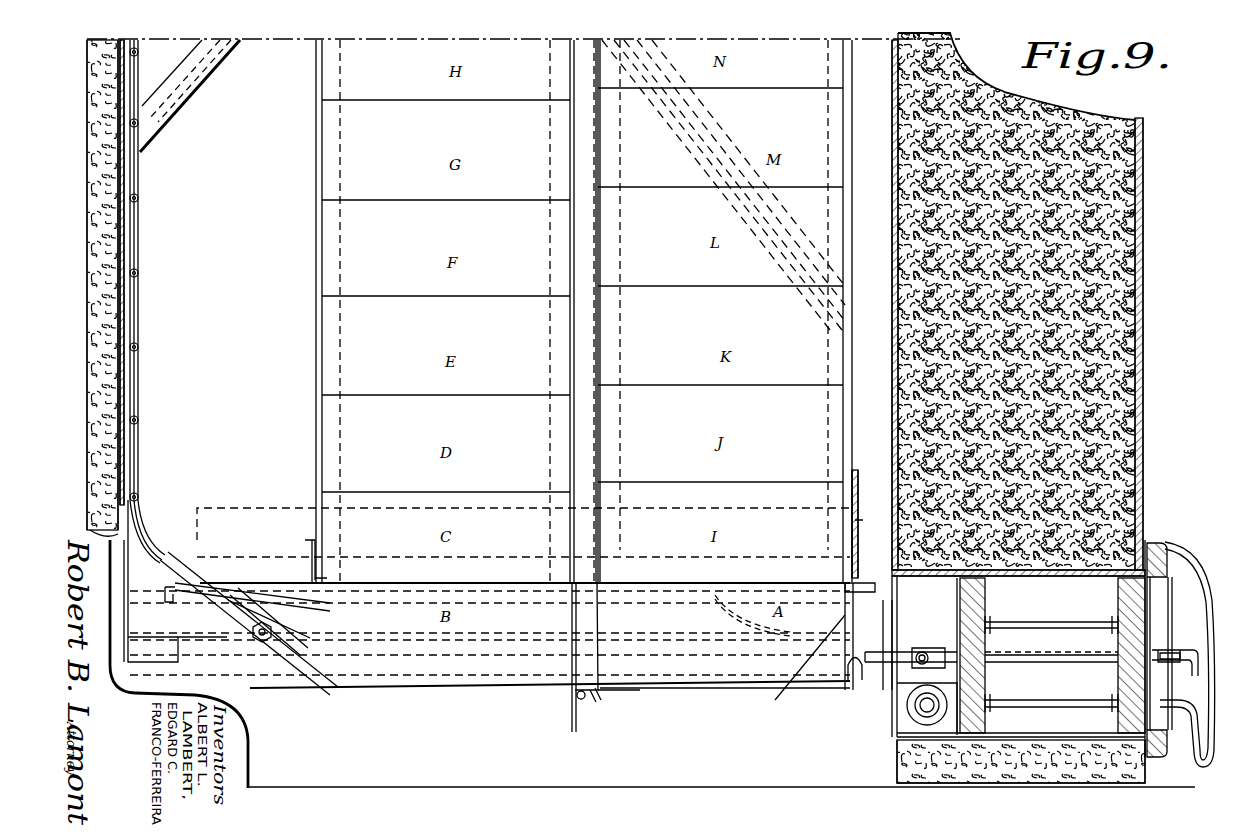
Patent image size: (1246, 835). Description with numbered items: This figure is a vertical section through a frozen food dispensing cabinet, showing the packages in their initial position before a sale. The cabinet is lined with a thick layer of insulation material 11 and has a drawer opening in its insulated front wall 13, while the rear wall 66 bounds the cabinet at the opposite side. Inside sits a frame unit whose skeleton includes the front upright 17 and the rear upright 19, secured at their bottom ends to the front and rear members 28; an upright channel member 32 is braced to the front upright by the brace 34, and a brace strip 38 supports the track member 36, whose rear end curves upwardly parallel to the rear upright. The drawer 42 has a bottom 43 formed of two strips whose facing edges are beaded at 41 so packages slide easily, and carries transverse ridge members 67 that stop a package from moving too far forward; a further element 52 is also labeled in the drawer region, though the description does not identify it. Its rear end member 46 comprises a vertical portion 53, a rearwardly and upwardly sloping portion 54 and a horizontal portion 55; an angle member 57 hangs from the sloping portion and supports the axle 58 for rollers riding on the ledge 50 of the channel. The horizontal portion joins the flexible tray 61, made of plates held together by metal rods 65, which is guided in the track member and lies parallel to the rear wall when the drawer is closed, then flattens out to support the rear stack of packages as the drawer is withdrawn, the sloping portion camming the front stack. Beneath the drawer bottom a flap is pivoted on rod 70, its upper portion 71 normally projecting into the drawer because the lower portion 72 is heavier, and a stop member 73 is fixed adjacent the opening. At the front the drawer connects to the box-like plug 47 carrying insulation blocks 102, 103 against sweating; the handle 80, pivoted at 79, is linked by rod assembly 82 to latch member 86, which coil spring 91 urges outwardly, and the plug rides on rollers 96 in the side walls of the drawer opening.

The insulation material 11 is at (1110, 198).
The front wall 13 is at (1143, 328).
The front upright 17 is at (852, 246).
The rear upright 19 is at (318, 265).
The front and rear member 28 is at (310, 548).
The upright channel member 32 is at (590, 370).
The brace 34 is at (736, 140).
The track member 36 is at (152, 525).
The brace strip 38 is at (192, 91).
The bead 41 is at (452, 688).
The drawer 42 is at (788, 685).
The bottom 43 is at (722, 688).
The rear end member 46 is at (298, 668).
The box-shaped structure or plug 47 is at (1100, 540).
The ledge 50 is at (160, 662).
The plate 52 is at (814, 632).
The vertical portion 53 is at (320, 683).
The sloping portion 54 is at (322, 625).
The horizontal portion 55 is at (176, 598).
The angle member 57 is at (250, 634).
The axle 58 is at (255, 655).
The tray 61 is at (140, 407).
The metal rod 65 is at (138, 347).
The rear wall 66 is at (120, 291).
The transverse ridge member 67 is at (832, 672).
The rod 70 is at (583, 700).
The upper portion of the flap 71 is at (590, 675).
The lower portion of the flap 72 is at (572, 720).
The stop member 73 is at (600, 702).
The pivot 79 is at (1172, 560).
The handle 80 is at (1185, 648).
The rod assembly 82 is at (1175, 652).
The latch member 86 is at (898, 650).
The coil spring 91 is at (925, 652).
The roller 96 is at (905, 708).
The insulation block 102 is at (1118, 683).
The insulation block 103 is at (985, 603).